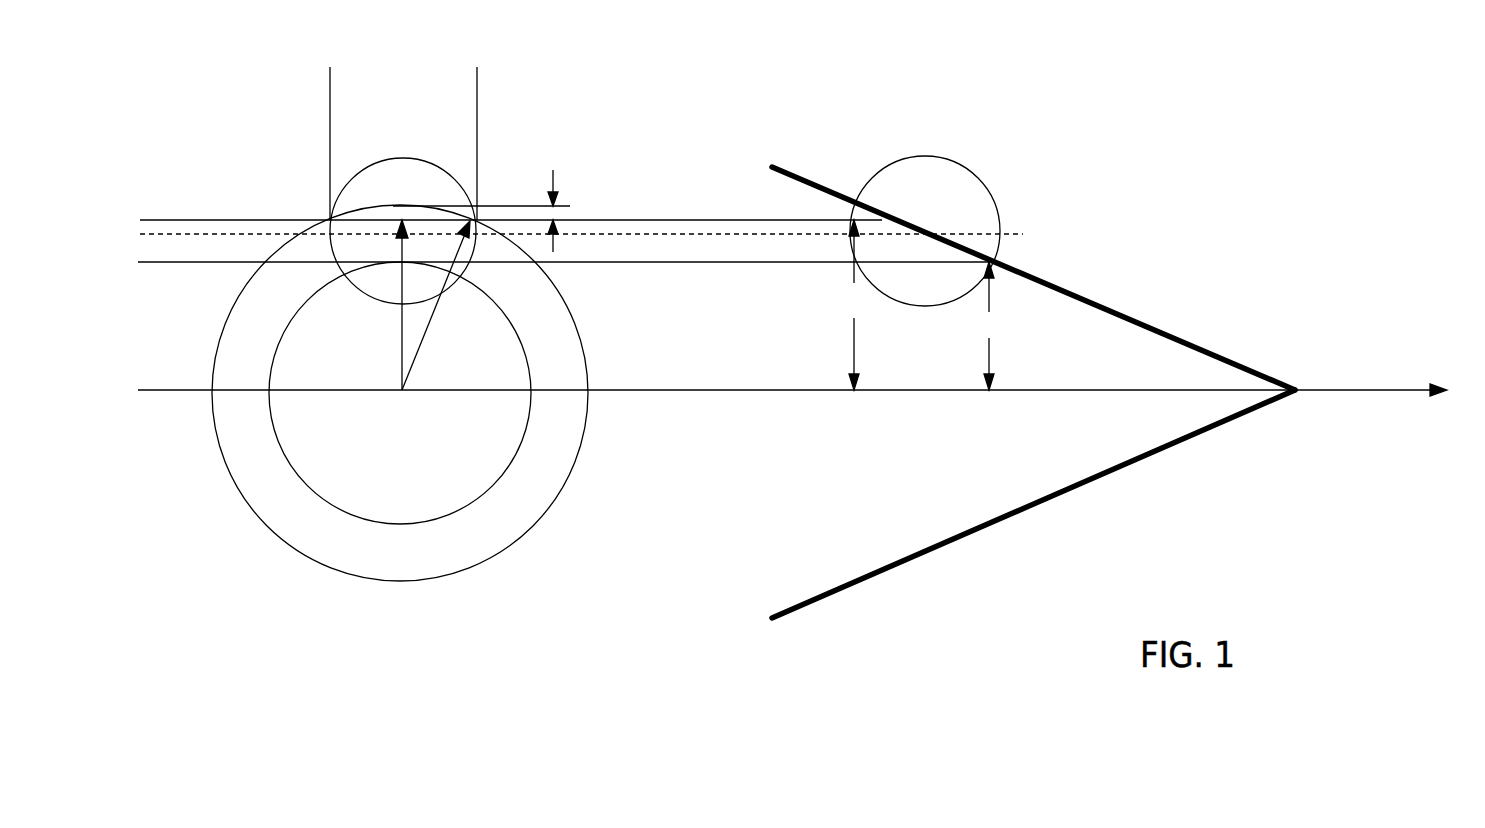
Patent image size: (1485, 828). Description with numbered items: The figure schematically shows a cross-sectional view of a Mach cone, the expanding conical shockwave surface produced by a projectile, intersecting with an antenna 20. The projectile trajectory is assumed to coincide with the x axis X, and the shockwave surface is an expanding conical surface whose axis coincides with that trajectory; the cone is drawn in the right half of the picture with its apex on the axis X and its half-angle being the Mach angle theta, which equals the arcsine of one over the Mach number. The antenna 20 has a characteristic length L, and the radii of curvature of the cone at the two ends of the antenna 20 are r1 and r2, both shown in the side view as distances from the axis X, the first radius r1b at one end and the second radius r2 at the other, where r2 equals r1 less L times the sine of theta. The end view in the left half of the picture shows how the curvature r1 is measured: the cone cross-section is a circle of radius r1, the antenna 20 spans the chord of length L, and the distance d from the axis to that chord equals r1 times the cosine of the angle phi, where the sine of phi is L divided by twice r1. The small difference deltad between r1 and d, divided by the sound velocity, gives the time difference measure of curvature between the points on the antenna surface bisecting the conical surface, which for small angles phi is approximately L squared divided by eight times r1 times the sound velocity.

The antenna 20 is at (1015, 182).
The x axis X is at (792, 377).
The characteristic length of the antenna L is at (477, 118).
The distance d is at (393, 305).
The radius of curvature r1 is at (436, 305).
The radius of curvature r1 r1b is at (852, 305).
The radius of curvature r2 is at (989, 326).
The angle phi is at (412, 345).
The Mach angle theta is at (1033, 392).
The curvature difference delta d deltad is at (597, 210).